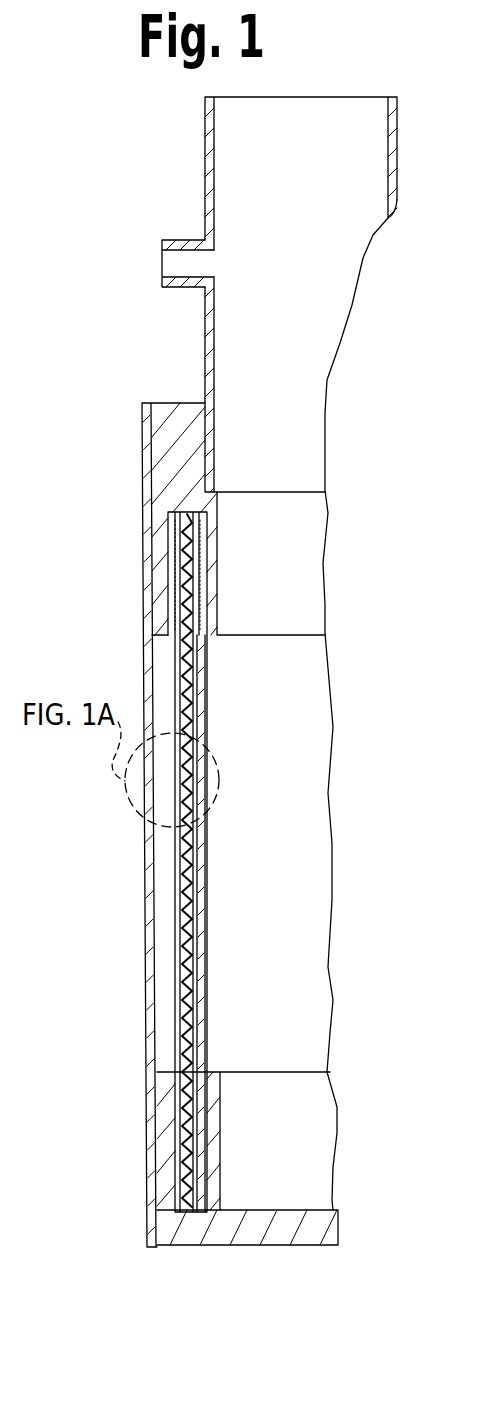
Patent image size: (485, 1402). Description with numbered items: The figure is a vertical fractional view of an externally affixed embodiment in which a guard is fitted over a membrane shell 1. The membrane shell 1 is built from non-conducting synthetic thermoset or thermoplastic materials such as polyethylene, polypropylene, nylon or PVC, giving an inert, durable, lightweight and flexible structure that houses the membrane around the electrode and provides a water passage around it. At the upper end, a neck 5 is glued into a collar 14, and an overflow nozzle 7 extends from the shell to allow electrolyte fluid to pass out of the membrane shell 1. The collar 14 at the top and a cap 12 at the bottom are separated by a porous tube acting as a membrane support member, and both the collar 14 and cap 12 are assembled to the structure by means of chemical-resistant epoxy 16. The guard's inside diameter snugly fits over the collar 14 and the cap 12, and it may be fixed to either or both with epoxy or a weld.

The membrane shell 1 is at (122, 135).
The neck 5 is at (205, 182).
The overflow nozzle 7 is at (162, 262).
The cap 12 is at (245, 1245).
The collar 14 is at (168, 403).
The chemical-resistant epoxy 16 is at (172, 570).